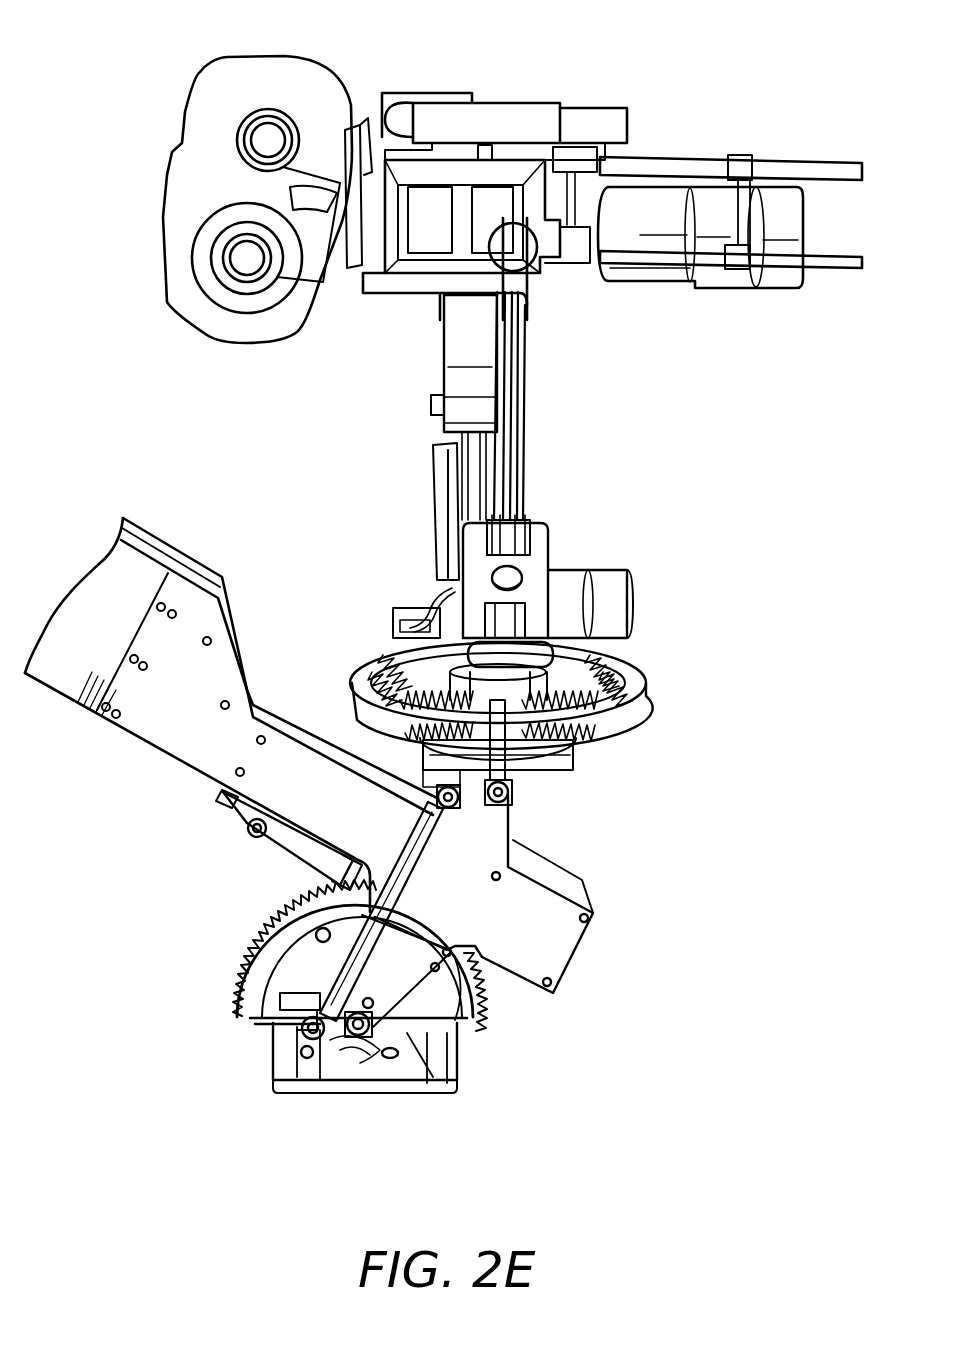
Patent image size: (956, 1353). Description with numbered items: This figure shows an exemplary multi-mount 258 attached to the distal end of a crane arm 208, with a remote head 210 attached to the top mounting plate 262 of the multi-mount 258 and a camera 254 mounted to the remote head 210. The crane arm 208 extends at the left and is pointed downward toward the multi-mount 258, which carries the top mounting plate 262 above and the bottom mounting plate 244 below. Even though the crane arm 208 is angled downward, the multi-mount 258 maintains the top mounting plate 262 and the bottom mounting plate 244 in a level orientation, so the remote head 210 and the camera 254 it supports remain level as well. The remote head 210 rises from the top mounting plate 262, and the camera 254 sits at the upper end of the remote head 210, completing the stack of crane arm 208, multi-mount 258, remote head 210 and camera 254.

The crane arm 208 is at (173, 540).
The remote head 210 is at (528, 413).
The bottom mounting plate 244 is at (453, 1062).
The camera 254 is at (510, 100).
The multi-mount 258 is at (158, 838).
The top mounting plate 262 is at (580, 770).